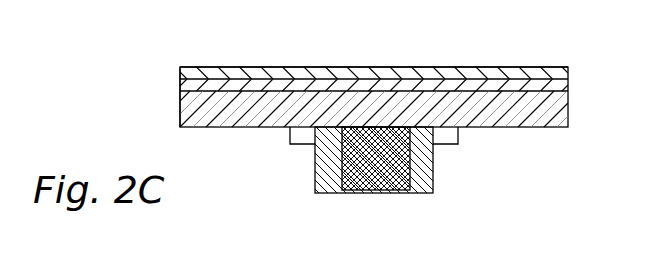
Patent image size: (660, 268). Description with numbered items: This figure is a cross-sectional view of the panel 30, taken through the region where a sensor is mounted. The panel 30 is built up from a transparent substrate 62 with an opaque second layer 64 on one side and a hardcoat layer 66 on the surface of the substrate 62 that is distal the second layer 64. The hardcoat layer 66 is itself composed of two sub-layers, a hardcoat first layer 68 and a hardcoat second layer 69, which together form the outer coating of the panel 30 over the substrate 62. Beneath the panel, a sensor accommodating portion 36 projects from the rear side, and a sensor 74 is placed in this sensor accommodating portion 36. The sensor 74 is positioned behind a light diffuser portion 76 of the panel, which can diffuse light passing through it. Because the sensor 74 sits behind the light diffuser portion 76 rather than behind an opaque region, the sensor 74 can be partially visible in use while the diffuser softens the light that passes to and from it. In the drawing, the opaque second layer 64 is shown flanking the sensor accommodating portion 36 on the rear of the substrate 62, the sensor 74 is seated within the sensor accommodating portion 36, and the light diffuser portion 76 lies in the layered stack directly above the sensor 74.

The panel 30 is at (240, 64).
The substrate 62 is at (178, 113).
The hardcoat layer 66 is at (468, 67).
The hardcoat second layer 69 is at (569, 79).
The hardcoat first layer 68 is at (569, 83).
The second layer 64 is at (300, 140).
The sensor accommodating portion 36 is at (433, 169).
The sensor 74 is at (370, 193).
The light diffuser portion 76 is at (372, 127).